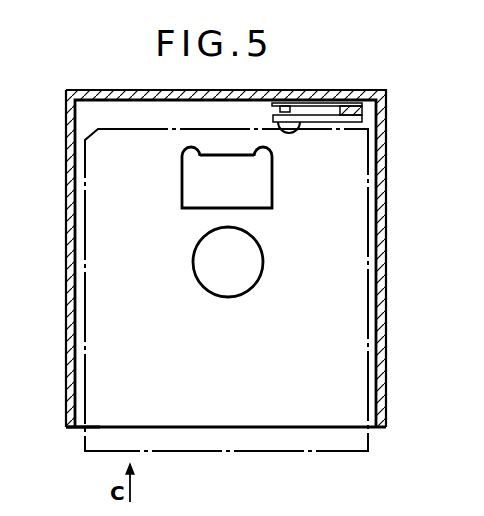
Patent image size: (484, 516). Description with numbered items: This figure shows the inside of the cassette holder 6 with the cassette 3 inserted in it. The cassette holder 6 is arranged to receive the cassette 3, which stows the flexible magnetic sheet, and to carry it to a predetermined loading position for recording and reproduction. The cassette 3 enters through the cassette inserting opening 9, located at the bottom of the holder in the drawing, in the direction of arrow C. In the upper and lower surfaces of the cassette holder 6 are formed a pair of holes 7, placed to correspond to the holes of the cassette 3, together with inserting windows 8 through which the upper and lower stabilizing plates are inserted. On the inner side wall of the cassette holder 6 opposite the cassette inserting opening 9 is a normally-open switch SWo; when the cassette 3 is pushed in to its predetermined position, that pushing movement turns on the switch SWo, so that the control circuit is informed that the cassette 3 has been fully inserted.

The cassette 3 is at (345, 443).
The cassette holder 6 is at (386, 238).
The holes 7 is at (262, 253).
The inserting windows 8 is at (182, 174).
The cassette inserting opening 9 is at (78, 428).
The normally-open switch SWo is at (362, 110).